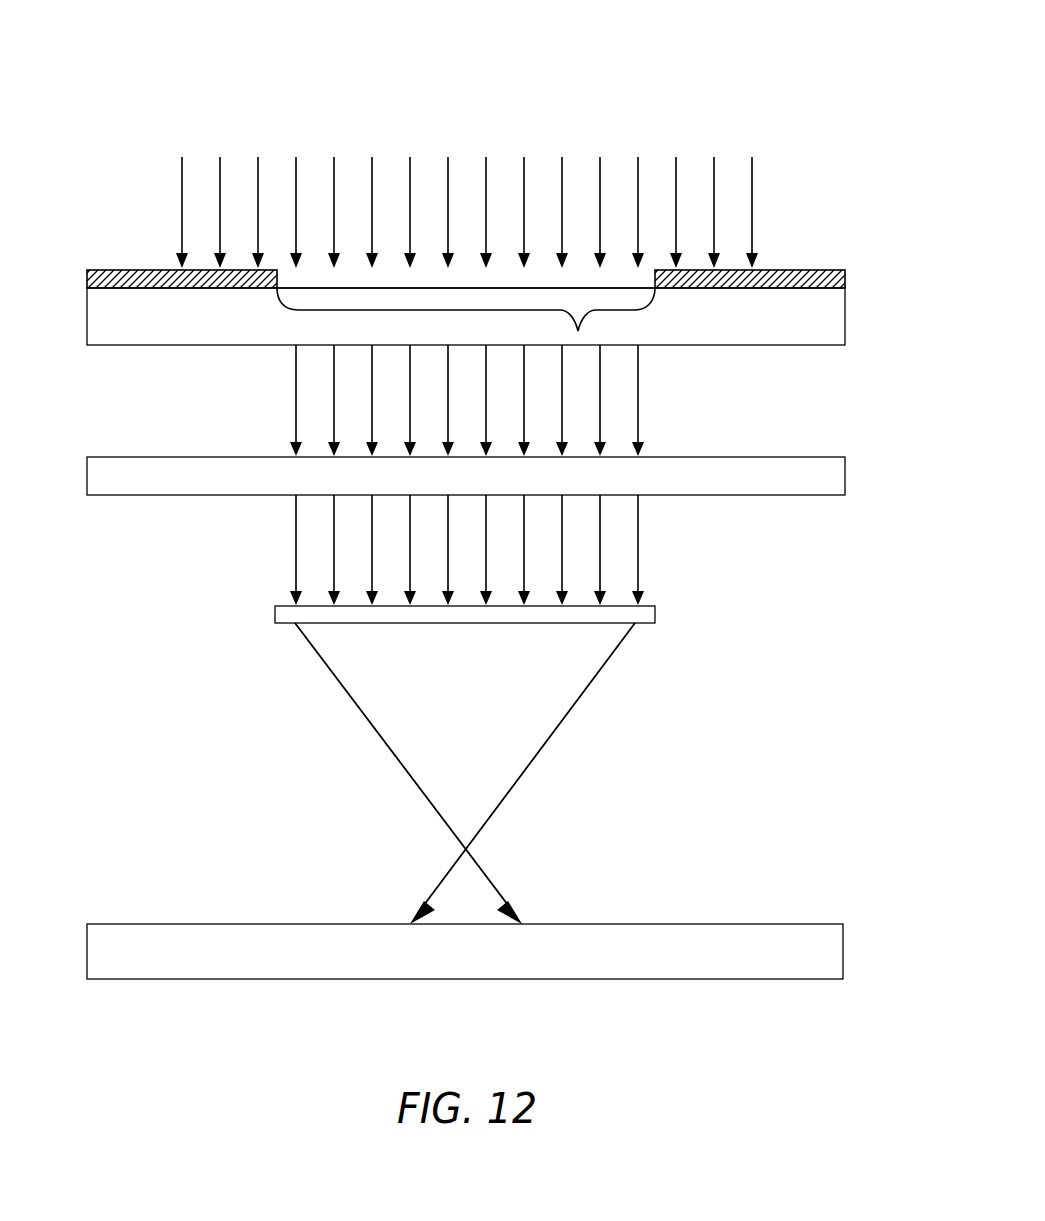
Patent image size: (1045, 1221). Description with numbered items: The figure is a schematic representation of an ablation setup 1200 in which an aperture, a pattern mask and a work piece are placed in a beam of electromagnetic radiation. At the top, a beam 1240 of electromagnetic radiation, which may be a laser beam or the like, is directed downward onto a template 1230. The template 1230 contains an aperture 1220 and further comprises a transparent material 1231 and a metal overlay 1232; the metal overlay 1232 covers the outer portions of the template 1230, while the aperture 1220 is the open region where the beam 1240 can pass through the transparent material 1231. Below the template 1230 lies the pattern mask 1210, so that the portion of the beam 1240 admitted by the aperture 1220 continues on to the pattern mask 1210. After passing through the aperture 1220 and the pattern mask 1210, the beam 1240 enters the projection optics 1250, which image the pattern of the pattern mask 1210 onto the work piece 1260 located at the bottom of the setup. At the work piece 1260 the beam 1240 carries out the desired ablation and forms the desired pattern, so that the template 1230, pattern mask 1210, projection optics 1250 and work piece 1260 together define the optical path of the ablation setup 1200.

The optical system 1200 is at (808, 102).
The beam of electromagnetic radiation 1240 is at (156, 134).
The template 1230 is at (693, 348).
The transparent material 1231 is at (200, 324).
The metal overlay 1232 is at (843, 277).
The aperture 1220 is at (580, 331).
The pattern mask 1210 is at (200, 475).
The projection optics 1250 is at (428, 612).
The work piece 1260 is at (749, 960).